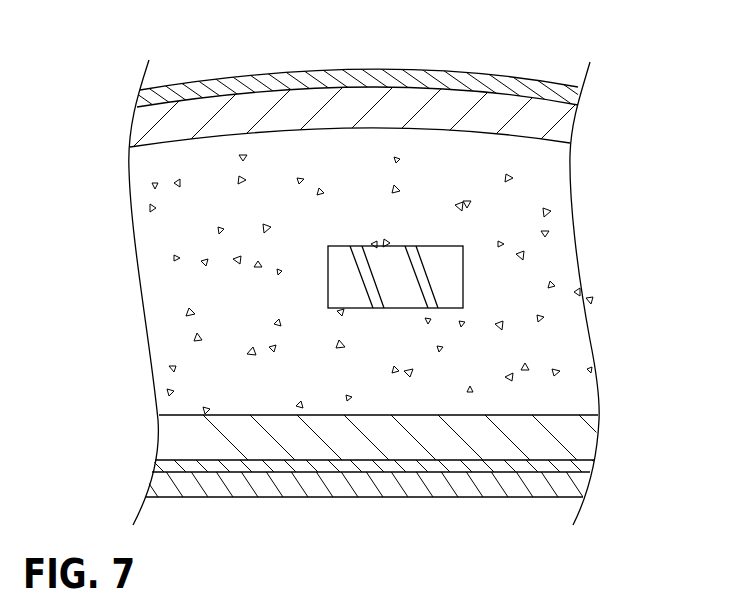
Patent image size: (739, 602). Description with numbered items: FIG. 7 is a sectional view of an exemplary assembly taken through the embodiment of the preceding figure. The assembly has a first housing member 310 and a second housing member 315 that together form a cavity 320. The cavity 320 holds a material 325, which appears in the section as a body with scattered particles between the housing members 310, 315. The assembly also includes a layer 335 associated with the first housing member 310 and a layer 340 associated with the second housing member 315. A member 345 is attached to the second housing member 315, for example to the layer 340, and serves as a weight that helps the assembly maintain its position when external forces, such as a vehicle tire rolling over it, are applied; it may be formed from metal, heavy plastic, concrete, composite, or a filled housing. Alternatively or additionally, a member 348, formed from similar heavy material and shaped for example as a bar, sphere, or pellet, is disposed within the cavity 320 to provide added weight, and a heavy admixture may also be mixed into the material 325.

The first housing member 310 is at (512, 112).
The second housing member 315 is at (287, 440).
The cavity 320 is at (101, 227).
The material 325 is at (194, 333).
The layer 335 is at (437, 80).
The layer 340 is at (356, 468).
The member 345 is at (216, 486).
The member 348 is at (455, 272).